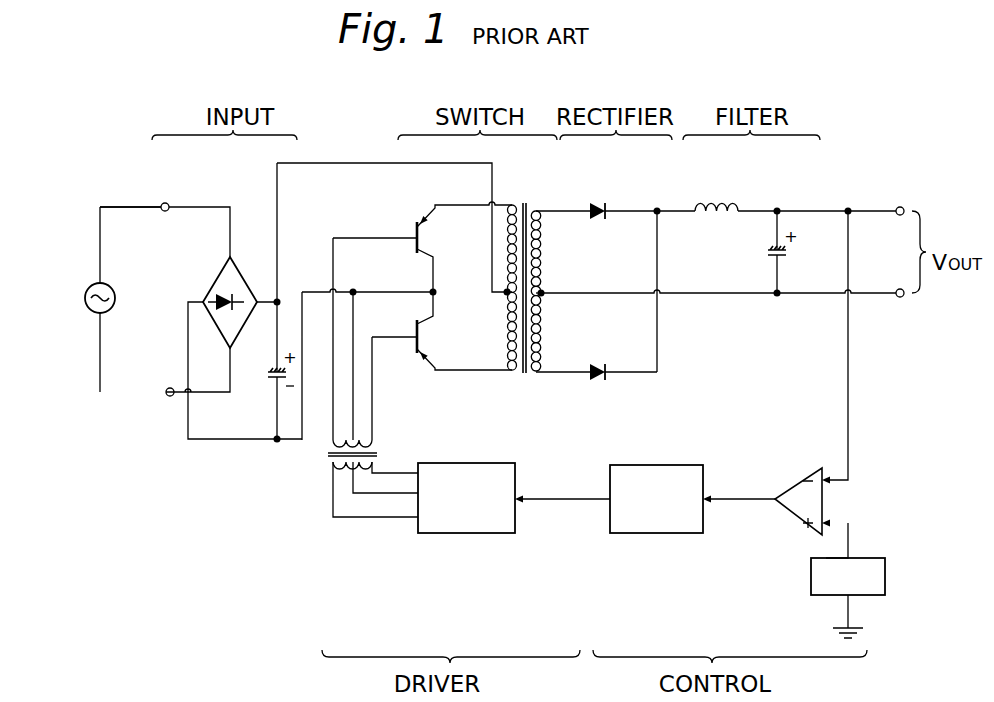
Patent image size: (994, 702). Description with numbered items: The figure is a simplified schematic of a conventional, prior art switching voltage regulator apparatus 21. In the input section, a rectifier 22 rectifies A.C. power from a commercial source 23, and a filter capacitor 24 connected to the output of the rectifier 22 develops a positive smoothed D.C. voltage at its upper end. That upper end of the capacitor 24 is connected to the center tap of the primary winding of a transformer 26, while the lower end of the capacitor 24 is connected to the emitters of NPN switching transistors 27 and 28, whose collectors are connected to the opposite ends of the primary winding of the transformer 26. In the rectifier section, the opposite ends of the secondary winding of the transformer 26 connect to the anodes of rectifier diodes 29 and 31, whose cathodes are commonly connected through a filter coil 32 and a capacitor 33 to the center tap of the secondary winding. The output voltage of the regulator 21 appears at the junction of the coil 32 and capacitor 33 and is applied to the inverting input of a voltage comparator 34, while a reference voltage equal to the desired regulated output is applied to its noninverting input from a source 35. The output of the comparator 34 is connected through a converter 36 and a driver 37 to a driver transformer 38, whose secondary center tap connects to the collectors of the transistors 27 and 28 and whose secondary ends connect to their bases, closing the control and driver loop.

The switching voltage regulator apparatus 21 is at (80, 177).
The rectifier 22 is at (214, 283).
The commercial source 23 is at (88, 308).
The filter capacitor 24 is at (267, 374).
The transformer 26 is at (545, 253).
The switching transistor 27 is at (418, 226).
The switching transistor 28 is at (417, 355).
The rectifier diode 29 is at (595, 202).
The rectifier diode 31 is at (596, 380).
The filter coil 32 is at (718, 205).
The capacitor 33 is at (765, 253).
The voltage comparator 34 is at (800, 481).
The source 35 is at (885, 578).
The converter 36 is at (656, 533).
The driver 37 is at (469, 533).
The driver transformer 38 is at (334, 462).